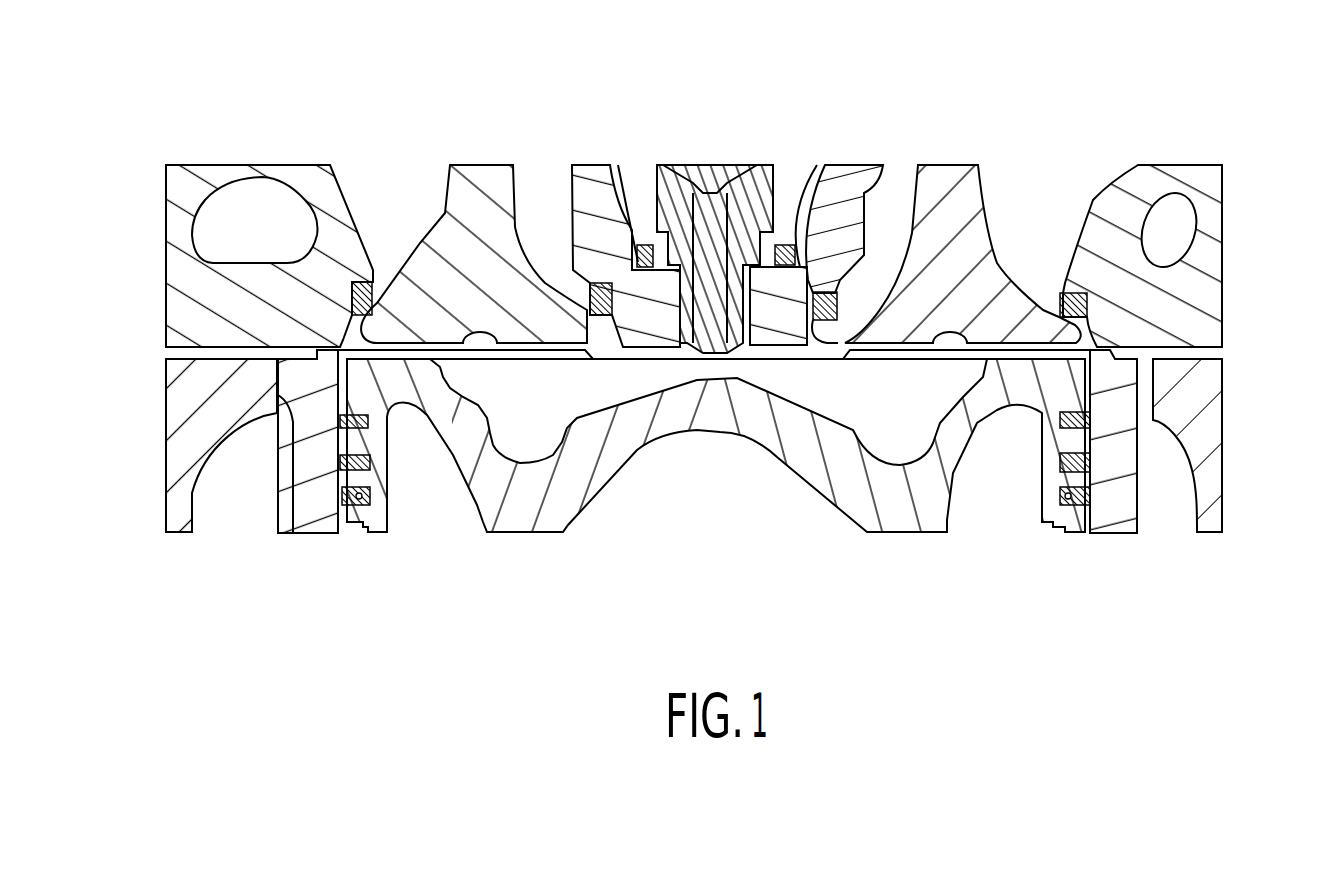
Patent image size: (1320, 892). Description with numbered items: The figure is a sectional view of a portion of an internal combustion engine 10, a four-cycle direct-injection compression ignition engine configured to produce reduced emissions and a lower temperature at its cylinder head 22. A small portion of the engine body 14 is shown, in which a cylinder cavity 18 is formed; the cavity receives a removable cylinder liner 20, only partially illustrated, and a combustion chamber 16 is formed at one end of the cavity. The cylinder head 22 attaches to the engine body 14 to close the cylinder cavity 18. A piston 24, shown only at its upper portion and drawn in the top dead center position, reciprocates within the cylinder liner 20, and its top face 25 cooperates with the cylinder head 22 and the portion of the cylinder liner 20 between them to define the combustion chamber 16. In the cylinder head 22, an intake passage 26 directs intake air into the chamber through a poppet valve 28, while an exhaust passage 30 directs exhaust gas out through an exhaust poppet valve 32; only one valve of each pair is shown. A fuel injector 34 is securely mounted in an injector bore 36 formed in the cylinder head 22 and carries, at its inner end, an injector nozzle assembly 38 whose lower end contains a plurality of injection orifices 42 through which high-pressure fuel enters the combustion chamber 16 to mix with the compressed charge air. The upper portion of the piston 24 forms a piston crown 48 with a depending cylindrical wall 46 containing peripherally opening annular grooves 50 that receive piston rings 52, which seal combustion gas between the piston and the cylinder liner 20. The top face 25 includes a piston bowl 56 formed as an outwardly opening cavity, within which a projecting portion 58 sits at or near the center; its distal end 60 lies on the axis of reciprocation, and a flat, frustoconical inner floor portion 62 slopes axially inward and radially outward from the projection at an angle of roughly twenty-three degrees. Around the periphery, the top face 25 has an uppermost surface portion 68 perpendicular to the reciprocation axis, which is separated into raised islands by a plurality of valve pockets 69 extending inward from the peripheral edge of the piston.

The internal combustion engine 10 is at (1142, 94).
The engine body 14 is at (200, 495).
The combustion chamber 16 is at (892, 395).
The cylinder cavity 18 is at (343, 523).
The cylinder liner 20 is at (317, 533).
The cylinder head 22 is at (218, 163).
The piston 24 is at (895, 533).
The top face 25 is at (503, 335).
The intake passage 26 is at (1070, 190).
The poppet valve 28 is at (910, 163).
The exhaust passage 30 is at (420, 183).
The exhaust poppet valve 32 is at (520, 163).
The fuel injector 34 is at (657, 143).
The injector bore 36 is at (808, 163).
The injector nozzle assembly 38 is at (737, 163).
The injection orifices 42 is at (700, 367).
The cylindrical wall 46 is at (1053, 522).
The piston crown 48 is at (352, 344).
The annular grooves 50 is at (1063, 463).
The piston rings 52 is at (1083, 463).
The piston bowl 56 is at (818, 385).
The projecting portion 58 is at (767, 425).
The distal end 60 is at (707, 375).
The inner floor portion 62 is at (600, 420).
The uppermost surface portion 68 is at (538, 347).
The valve pockets 69 is at (400, 357).